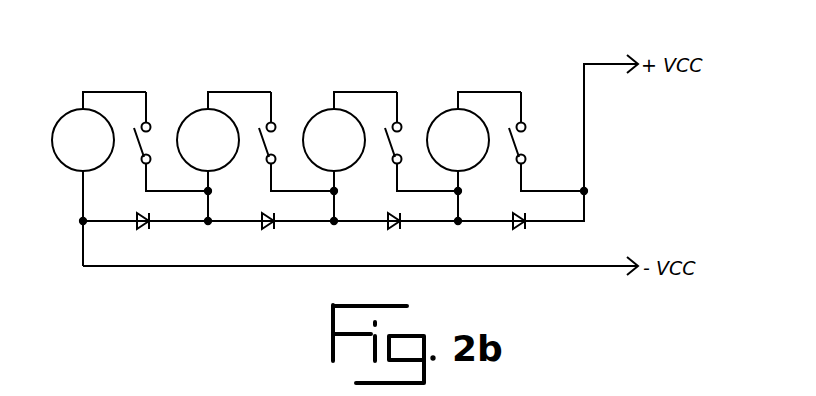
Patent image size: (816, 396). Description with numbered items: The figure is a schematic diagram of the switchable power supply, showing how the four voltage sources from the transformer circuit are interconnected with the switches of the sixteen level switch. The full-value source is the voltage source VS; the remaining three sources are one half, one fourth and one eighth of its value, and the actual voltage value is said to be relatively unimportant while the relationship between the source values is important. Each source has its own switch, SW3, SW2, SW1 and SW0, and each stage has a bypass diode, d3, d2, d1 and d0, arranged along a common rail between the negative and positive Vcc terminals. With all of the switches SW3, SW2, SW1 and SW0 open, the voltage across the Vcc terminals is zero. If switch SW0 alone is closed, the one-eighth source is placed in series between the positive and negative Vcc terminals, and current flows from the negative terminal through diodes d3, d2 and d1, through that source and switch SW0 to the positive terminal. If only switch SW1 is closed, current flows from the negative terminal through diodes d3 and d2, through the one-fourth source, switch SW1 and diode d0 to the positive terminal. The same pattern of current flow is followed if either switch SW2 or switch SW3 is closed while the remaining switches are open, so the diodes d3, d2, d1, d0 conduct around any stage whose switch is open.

The voltage source VS is at (99, 177).
The switch SW3 is at (173, 143).
The switch SW2 is at (298, 143).
The switch SW1 is at (423, 143).
The switch SW0 is at (548, 143).
The diode d3 is at (146, 229).
The diode d2 is at (271, 229).
The diode d1 is at (397, 229).
The diode d0 is at (522, 229).